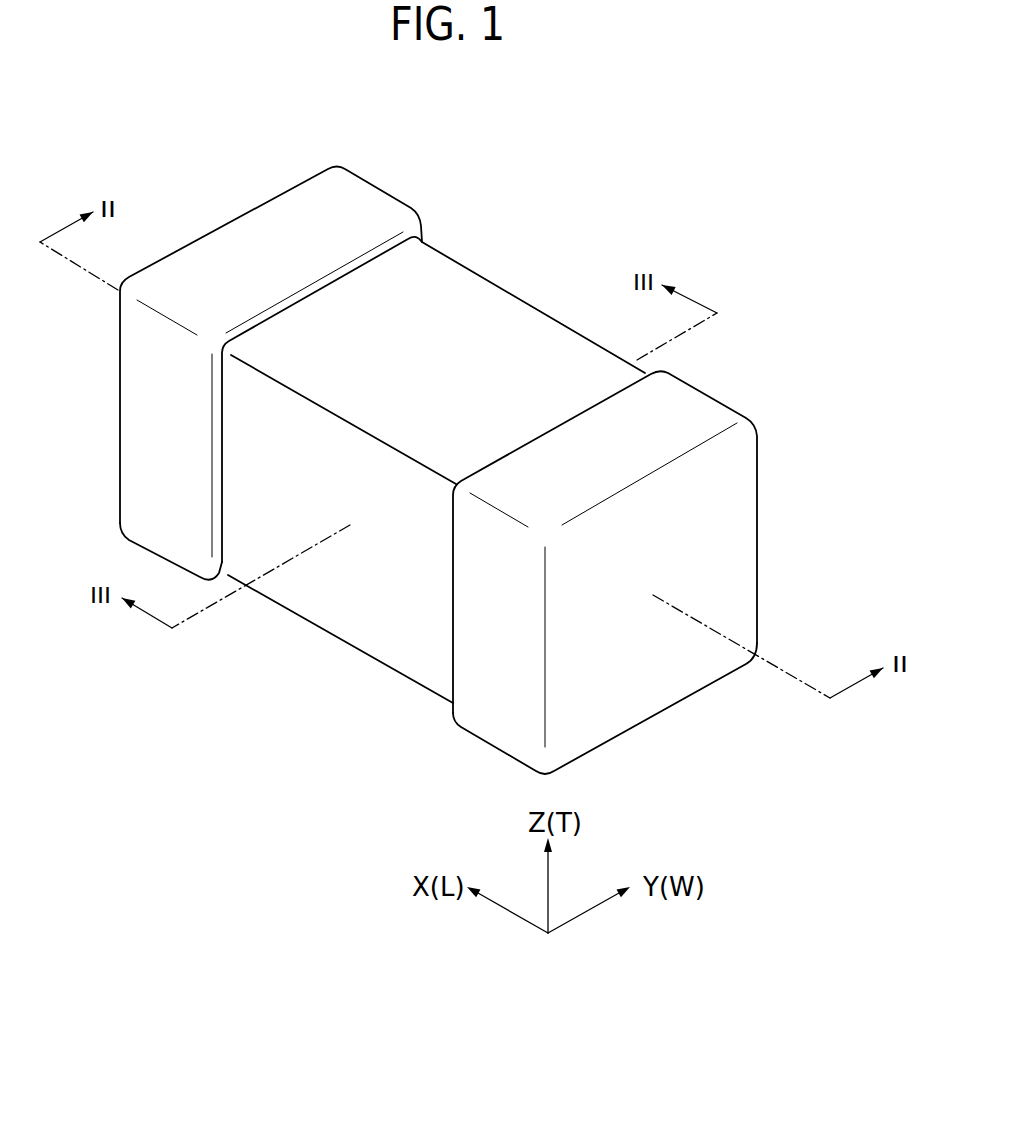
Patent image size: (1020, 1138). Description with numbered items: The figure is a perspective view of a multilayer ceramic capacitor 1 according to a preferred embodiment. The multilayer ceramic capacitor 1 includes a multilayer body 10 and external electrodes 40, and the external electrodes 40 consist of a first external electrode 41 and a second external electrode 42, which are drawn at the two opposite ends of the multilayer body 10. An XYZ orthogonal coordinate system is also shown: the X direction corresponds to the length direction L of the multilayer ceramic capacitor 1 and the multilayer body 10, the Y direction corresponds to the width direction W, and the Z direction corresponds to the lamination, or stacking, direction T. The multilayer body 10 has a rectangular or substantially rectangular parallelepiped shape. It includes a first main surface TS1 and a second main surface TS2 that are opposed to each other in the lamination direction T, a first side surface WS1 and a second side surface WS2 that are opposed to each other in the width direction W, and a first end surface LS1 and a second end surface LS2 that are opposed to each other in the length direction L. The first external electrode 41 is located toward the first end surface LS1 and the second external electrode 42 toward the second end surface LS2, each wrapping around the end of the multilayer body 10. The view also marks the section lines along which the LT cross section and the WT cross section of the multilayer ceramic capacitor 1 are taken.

The multilayer ceramic capacitor 1 is at (793, 243).
The multilayer body 10 is at (403, 325).
The external electrodes 40 is at (470, 440).
The first external electrode 41 is at (338, 205).
The second external electrode 42 is at (708, 402).
The first end surface LS1 is at (240, 218).
The second end surface LS2 is at (677, 670).
The first main surface TS1 is at (460, 360).
The second main surface TS2 is at (305, 613).
The first side surface WS1 is at (400, 650).
The second side surface WS2 is at (565, 322).